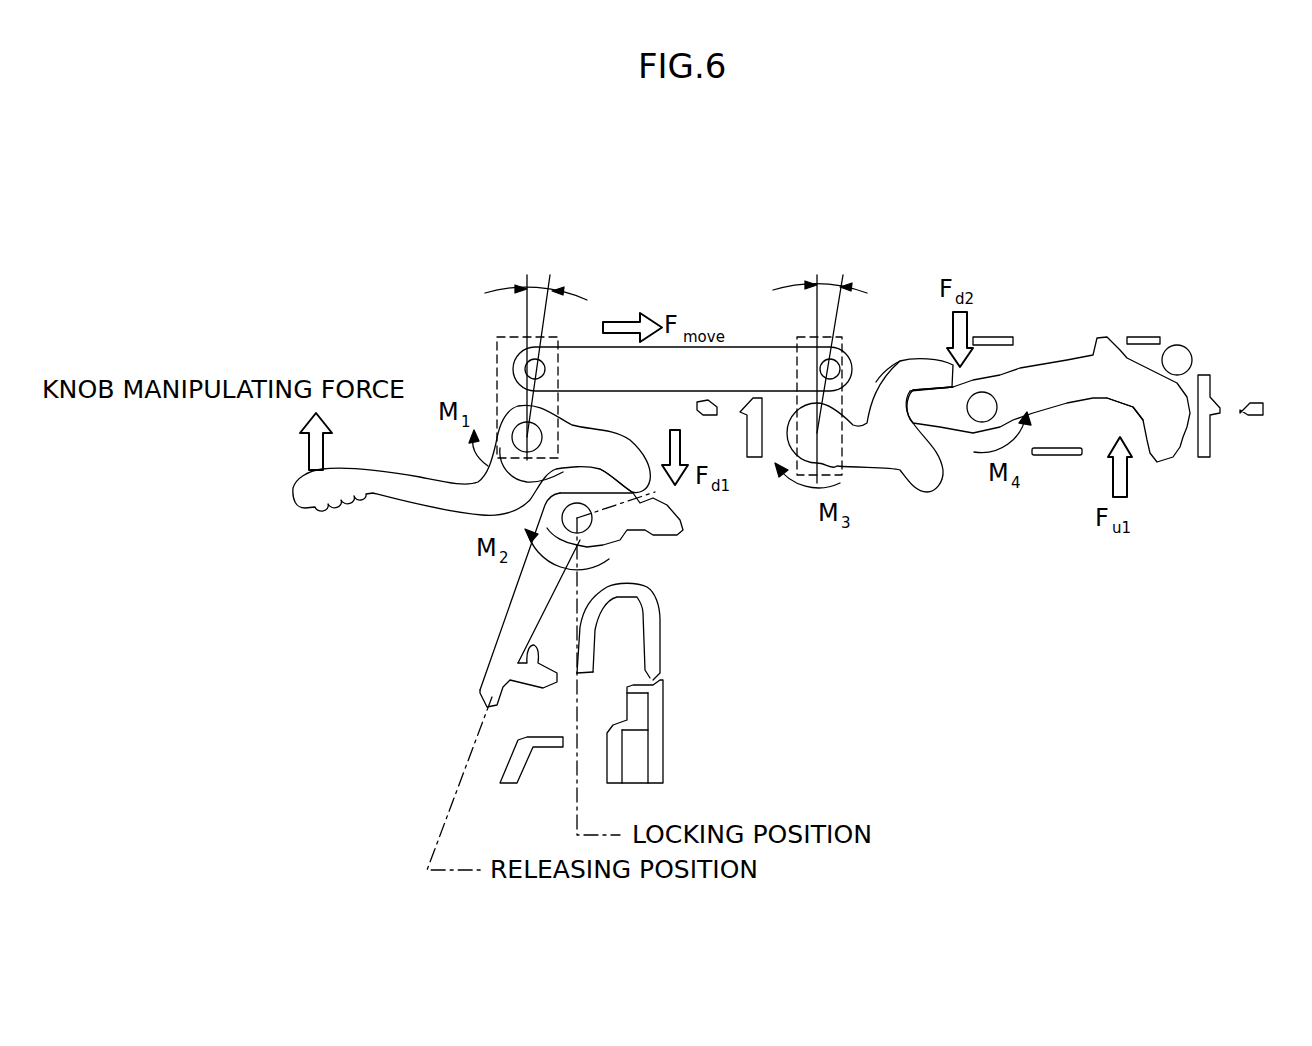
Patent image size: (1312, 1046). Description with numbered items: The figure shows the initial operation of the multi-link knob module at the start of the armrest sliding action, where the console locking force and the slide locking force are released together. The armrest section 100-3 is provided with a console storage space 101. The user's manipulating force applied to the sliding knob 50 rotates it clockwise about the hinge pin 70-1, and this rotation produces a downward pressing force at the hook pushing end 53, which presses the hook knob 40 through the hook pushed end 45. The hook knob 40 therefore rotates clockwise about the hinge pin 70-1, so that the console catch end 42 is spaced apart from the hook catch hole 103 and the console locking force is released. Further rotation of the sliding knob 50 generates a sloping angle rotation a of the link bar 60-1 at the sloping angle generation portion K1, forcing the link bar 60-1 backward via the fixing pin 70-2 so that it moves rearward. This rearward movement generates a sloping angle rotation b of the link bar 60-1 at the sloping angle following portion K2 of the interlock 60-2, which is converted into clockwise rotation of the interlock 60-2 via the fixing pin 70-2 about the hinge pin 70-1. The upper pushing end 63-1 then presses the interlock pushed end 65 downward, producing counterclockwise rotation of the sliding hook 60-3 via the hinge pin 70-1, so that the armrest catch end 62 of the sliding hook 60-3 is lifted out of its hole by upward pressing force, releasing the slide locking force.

The sloping angle generation portion K1 is at (497, 337).
The sloping angle following portion K2 is at (818, 433).
The sloping angle rotation a is at (536, 353).
The sloping angle rotation b is at (820, 365).
The hinge pin 70-1 is at (533, 437).
The fixing pin 70-2 is at (535, 369).
The link bar 60-1 is at (748, 347).
The upper pushing end 63-1 is at (903, 372).
The sliding knob 50 is at (388, 485).
The hook pushing end 53 is at (638, 477).
The hook pushed end 45 is at (650, 531).
The hook knob 40 is at (518, 604).
The console catch end 42 is at (540, 655).
The hook catch hole 103 is at (592, 673).
The console storage space 101 is at (706, 694).
The armrest section 100-3 is at (663, 755).
The interlock 60-2 is at (882, 457).
The interlock pushed end 65 is at (930, 413).
The sliding hook 60-3 is at (1050, 393).
The armrest catch end 62 is at (1170, 440).